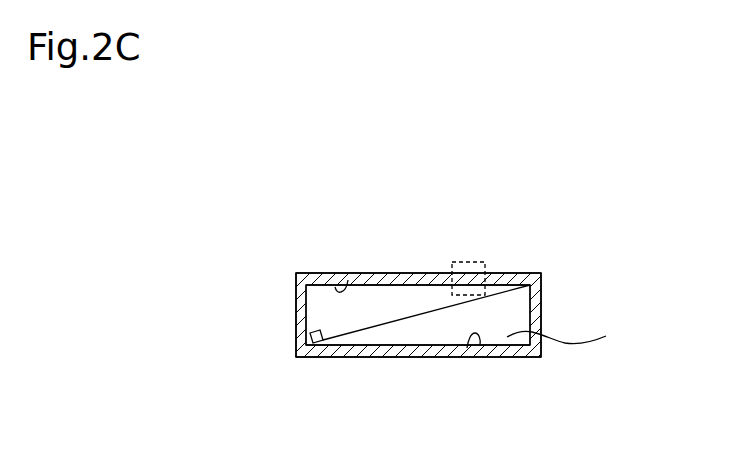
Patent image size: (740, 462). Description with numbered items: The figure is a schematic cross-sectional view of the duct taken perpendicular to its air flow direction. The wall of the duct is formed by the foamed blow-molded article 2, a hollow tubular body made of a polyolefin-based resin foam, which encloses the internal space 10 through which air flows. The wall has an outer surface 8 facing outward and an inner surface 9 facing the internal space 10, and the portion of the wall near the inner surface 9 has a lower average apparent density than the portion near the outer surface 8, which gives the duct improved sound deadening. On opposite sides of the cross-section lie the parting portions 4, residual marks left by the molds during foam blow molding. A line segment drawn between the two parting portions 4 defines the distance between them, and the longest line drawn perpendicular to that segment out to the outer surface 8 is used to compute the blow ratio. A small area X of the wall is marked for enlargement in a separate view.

The foamed blow-molded article 2 is at (419, 273).
The parting portion 4 is at (538, 276).
The outer surface 8 is at (373, 280).
The inner surface 9 is at (335, 287).
The internal space 10 is at (574, 335).
The area X is at (485, 262).